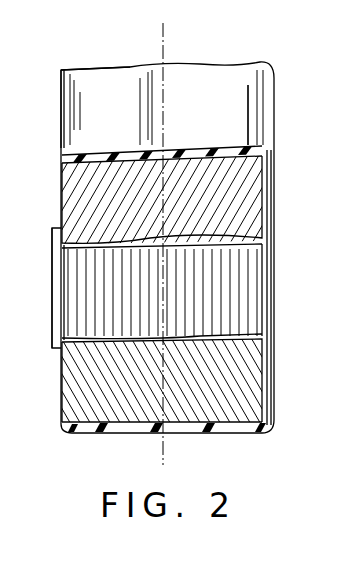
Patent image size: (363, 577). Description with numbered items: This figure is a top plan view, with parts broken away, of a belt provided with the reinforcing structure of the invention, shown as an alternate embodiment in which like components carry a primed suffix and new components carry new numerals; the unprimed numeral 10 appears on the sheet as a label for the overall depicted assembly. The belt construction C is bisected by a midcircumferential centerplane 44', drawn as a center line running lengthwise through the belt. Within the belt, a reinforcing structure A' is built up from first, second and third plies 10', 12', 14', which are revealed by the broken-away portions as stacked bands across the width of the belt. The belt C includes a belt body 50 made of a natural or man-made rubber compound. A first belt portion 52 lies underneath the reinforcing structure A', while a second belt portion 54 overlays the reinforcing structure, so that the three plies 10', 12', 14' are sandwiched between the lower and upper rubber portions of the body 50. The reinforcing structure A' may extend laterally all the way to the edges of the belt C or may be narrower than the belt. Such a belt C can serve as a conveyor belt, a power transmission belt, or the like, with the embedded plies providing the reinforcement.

The sealing ring assembly 10 is at (140, 247).
The first ply 10' is at (171, 381).
The second ply 12' is at (171, 195).
The third ply 14' is at (192, 291).
The midcircumferential centerplane 44' is at (192, 235).
The belt body 50 is at (92, 60).
The first belt portion 52 is at (243, 434).
The second belt portion 54 is at (70, 101).
The belt construction C is at (262, 112).
The reinforcing structure A' is at (28, 288).